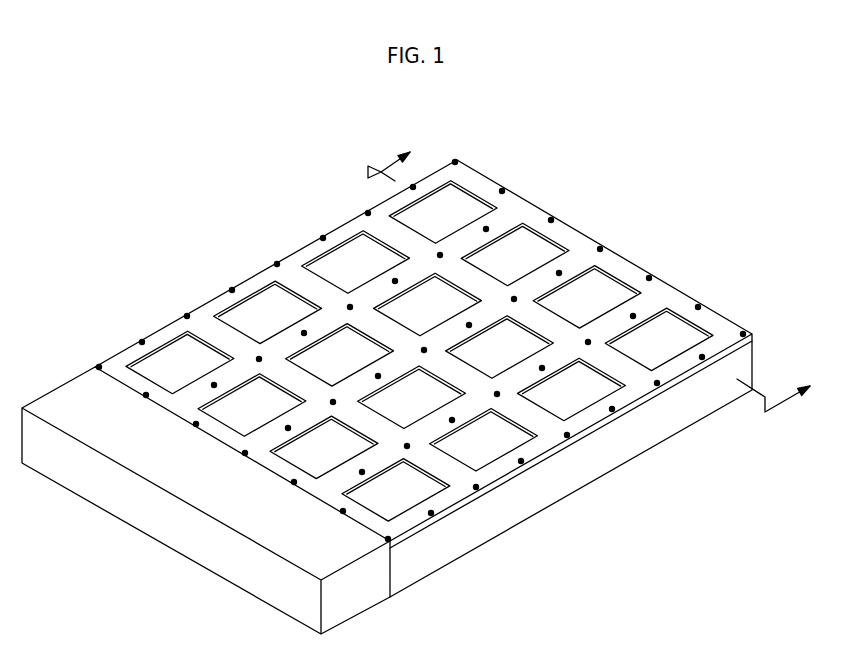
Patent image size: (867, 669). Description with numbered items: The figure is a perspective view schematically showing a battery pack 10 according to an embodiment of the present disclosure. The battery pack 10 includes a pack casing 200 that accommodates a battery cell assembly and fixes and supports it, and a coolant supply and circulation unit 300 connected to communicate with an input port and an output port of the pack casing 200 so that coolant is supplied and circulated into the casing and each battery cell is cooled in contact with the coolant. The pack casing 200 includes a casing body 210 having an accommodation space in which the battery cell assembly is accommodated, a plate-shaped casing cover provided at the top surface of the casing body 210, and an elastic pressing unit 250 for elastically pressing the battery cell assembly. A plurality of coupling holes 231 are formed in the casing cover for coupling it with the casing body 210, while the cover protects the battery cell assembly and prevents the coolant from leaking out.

The battery pack 10 is at (88, 213).
The pack casing 200 is at (621, 257).
The casing body 210 is at (598, 462).
The coupling hole 231 is at (482, 480).
The elastic pressing unit 250 is at (272, 317).
The coolant supply and circulation unit 300 is at (238, 563).